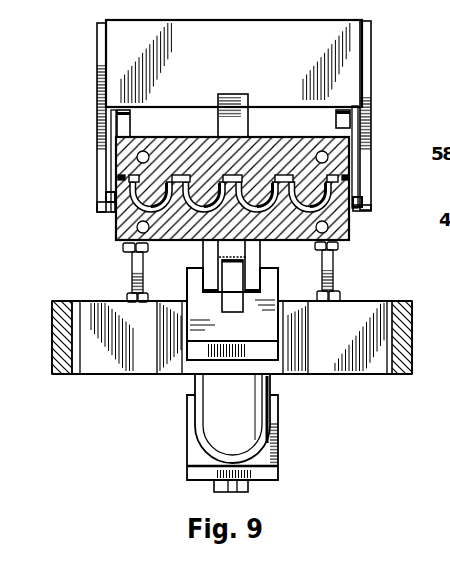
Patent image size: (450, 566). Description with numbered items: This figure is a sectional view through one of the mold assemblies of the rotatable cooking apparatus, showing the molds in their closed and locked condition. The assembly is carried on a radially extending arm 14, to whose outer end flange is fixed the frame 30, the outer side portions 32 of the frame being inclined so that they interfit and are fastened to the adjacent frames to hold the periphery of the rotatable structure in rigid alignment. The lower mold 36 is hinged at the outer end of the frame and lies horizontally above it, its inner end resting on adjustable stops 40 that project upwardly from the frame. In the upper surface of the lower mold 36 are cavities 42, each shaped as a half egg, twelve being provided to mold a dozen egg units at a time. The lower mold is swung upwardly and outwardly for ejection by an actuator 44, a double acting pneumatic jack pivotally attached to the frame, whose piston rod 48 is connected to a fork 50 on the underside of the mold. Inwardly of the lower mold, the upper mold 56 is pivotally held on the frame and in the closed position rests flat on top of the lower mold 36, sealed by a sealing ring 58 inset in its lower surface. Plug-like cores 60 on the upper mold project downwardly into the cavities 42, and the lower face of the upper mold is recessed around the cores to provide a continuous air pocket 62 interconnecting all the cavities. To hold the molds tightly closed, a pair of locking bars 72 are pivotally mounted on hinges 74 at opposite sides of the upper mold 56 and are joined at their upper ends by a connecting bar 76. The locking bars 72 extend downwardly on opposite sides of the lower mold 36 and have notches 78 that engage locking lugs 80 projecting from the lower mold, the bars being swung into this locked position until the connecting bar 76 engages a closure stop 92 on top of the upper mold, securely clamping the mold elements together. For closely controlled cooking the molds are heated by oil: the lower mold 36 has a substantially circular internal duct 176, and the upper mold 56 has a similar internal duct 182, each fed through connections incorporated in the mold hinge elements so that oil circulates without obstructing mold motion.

The arm 14 is at (250, 488).
The frame 30 is at (334, 371).
The outer side portions 32 is at (55, 302).
The lower mold 36 is at (345, 233).
The adjustable stops 40 is at (132, 268).
The cavities 42 is at (140, 208).
The actuator 44 is at (207, 407).
The piston rod 48 is at (232, 307).
The fork 50 is at (203, 252).
The upper mold 56 is at (130, 150).
The sealing ring 58 is at (118, 178).
The cores 60 is at (310, 197).
The air pocket 62 is at (354, 157).
The locking bars 72 is at (97, 88).
The hinges 74 is at (128, 110).
The connecting bar 76 is at (353, 35).
The notches 78 is at (110, 192).
The locking lugs 80 is at (98, 207).
The closure stop 92 is at (243, 97).
The internal duct 176 is at (327, 227).
The internal duct 182 is at (152, 150).